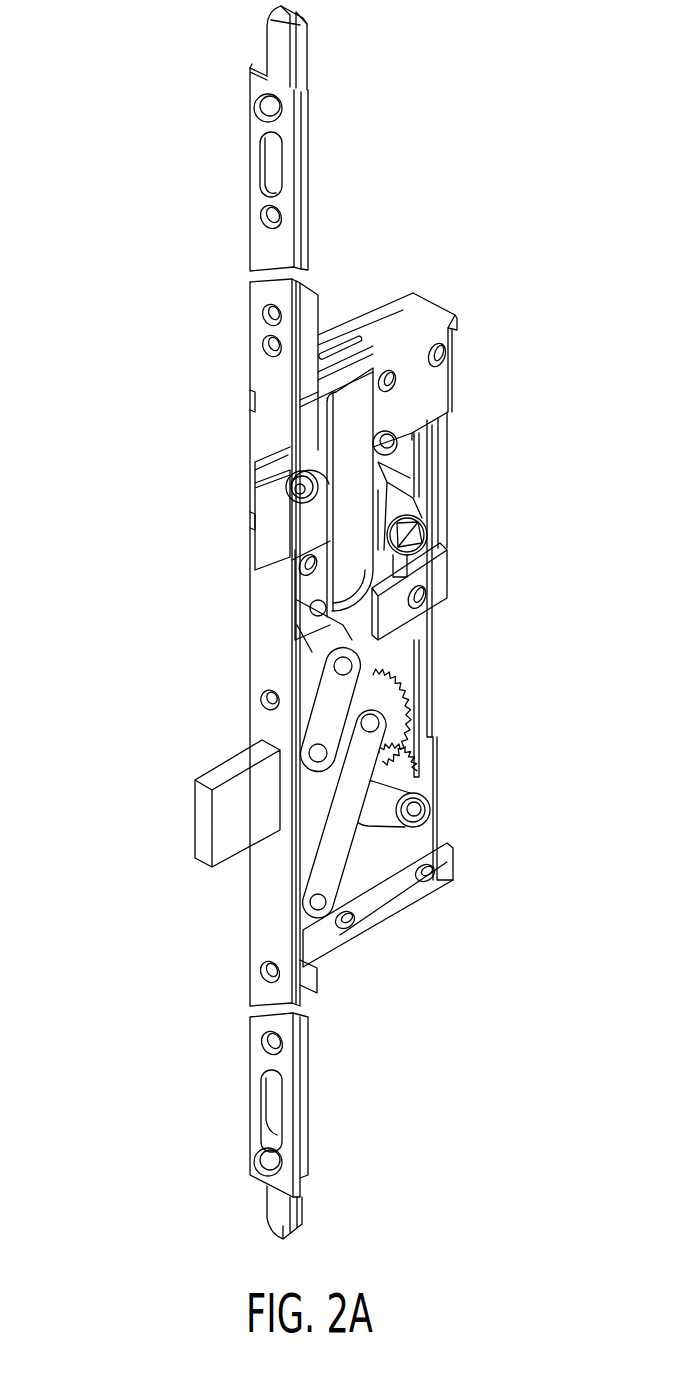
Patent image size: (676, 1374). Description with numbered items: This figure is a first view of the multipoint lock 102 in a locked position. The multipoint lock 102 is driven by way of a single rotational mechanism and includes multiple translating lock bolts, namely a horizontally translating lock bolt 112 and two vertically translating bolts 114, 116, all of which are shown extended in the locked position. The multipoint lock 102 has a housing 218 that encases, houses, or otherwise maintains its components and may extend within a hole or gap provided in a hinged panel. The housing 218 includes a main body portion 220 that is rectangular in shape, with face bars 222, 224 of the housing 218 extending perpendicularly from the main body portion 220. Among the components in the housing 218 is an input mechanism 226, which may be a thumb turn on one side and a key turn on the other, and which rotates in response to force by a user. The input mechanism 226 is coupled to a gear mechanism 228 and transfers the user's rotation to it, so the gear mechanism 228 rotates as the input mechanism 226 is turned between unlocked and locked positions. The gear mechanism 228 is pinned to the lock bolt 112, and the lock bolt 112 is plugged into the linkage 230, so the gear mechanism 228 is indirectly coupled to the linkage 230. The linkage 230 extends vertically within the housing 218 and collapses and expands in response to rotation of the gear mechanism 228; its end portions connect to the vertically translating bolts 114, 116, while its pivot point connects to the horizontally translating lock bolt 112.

The multipoint lock 102 is at (180, 92).
The horizontally translating lock bolt 112 is at (168, 832).
The vertically translating bolt 114 is at (242, 20).
The vertically translating bolt 116 is at (322, 1230).
The housing 218 is at (438, 268).
The main body portion 220 is at (432, 390).
The face bar 222 is at (258, 248).
The face bar 224 is at (254, 970).
The input mechanism 226 is at (452, 778).
The gear mechanism 228 is at (440, 690).
The linkage 230 is at (316, 738).